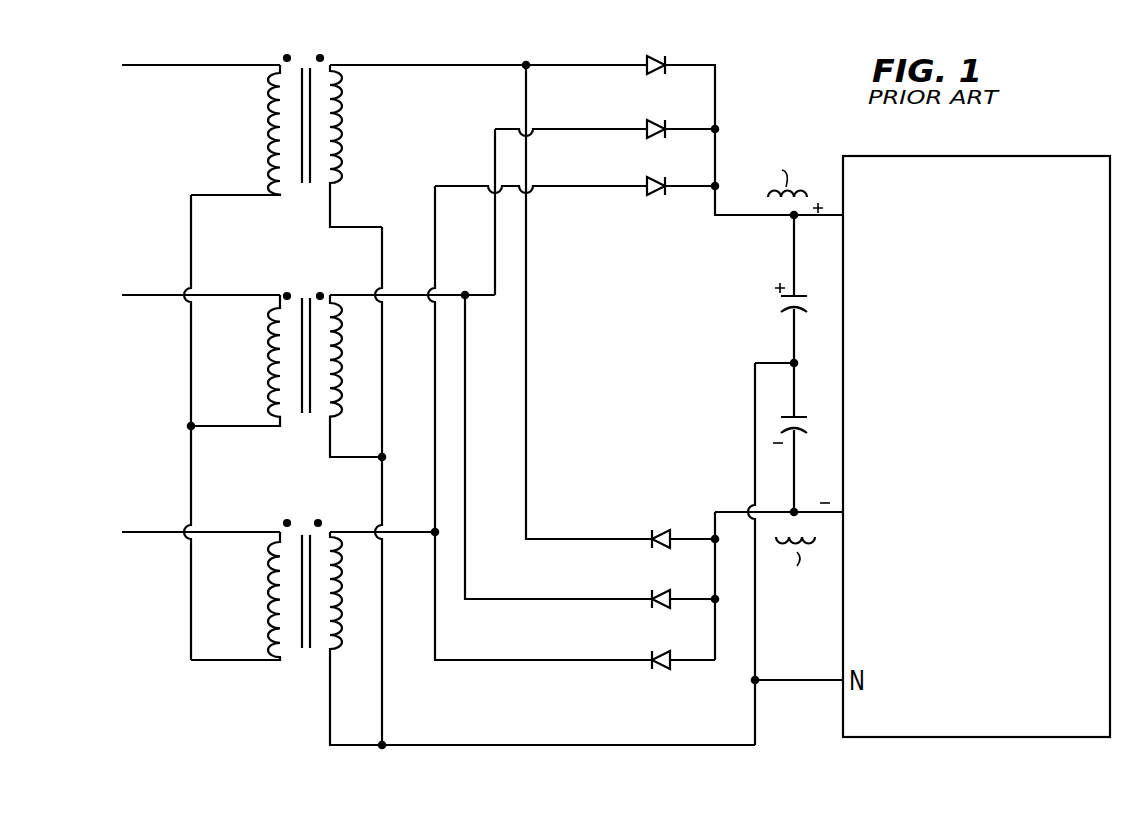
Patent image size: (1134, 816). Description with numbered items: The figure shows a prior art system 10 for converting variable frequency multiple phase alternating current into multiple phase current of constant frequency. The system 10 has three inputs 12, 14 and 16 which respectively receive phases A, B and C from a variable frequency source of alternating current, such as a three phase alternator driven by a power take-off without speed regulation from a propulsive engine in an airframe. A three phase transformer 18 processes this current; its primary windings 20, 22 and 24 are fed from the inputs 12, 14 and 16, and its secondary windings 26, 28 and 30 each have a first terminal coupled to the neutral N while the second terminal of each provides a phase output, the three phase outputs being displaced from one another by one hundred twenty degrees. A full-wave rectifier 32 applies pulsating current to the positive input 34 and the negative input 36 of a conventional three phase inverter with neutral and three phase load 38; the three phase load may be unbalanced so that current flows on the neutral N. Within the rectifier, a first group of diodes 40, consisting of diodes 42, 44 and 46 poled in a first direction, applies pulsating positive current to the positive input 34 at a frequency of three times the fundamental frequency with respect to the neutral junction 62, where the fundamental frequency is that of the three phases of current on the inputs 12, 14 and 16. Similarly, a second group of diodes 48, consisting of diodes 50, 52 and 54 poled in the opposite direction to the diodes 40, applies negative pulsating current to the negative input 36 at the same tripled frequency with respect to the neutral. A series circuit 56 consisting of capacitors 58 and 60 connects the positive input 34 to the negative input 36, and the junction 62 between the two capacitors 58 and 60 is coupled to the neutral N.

The prior art system 10 is at (208, 676).
The input 12 is at (125, 72).
The input 14 is at (125, 302).
The input 16 is at (125, 538).
The three-phase transformer 18 is at (268, 671).
The primary winding 20 is at (257, 129).
The primary winding 22 is at (219, 378).
The primary winding 24 is at (218, 600).
The secondary winding 26 is at (351, 138).
The secondary winding 28 is at (352, 362).
The secondary winding 30 is at (352, 602).
The full-wave rectifier 32 is at (555, 355).
The positive input 34 is at (833, 208).
The negative input 36 is at (834, 520).
The three phase inverter with neutral and three phase load 38 is at (991, 583).
The first group of diodes 40 is at (657, 173).
The diode 42 is at (667, 49).
The diode 44 is at (657, 114).
The diode 46 is at (657, 200).
The second group of diodes 48 is at (649, 582).
The diode 50 is at (655, 528).
The diode 52 is at (650, 615).
The diode 54 is at (665, 680).
The series circuit 56 is at (782, 363).
The capacitor 58 is at (775, 299).
The capacitor 60 is at (808, 428).
The junction 62 is at (800, 365).